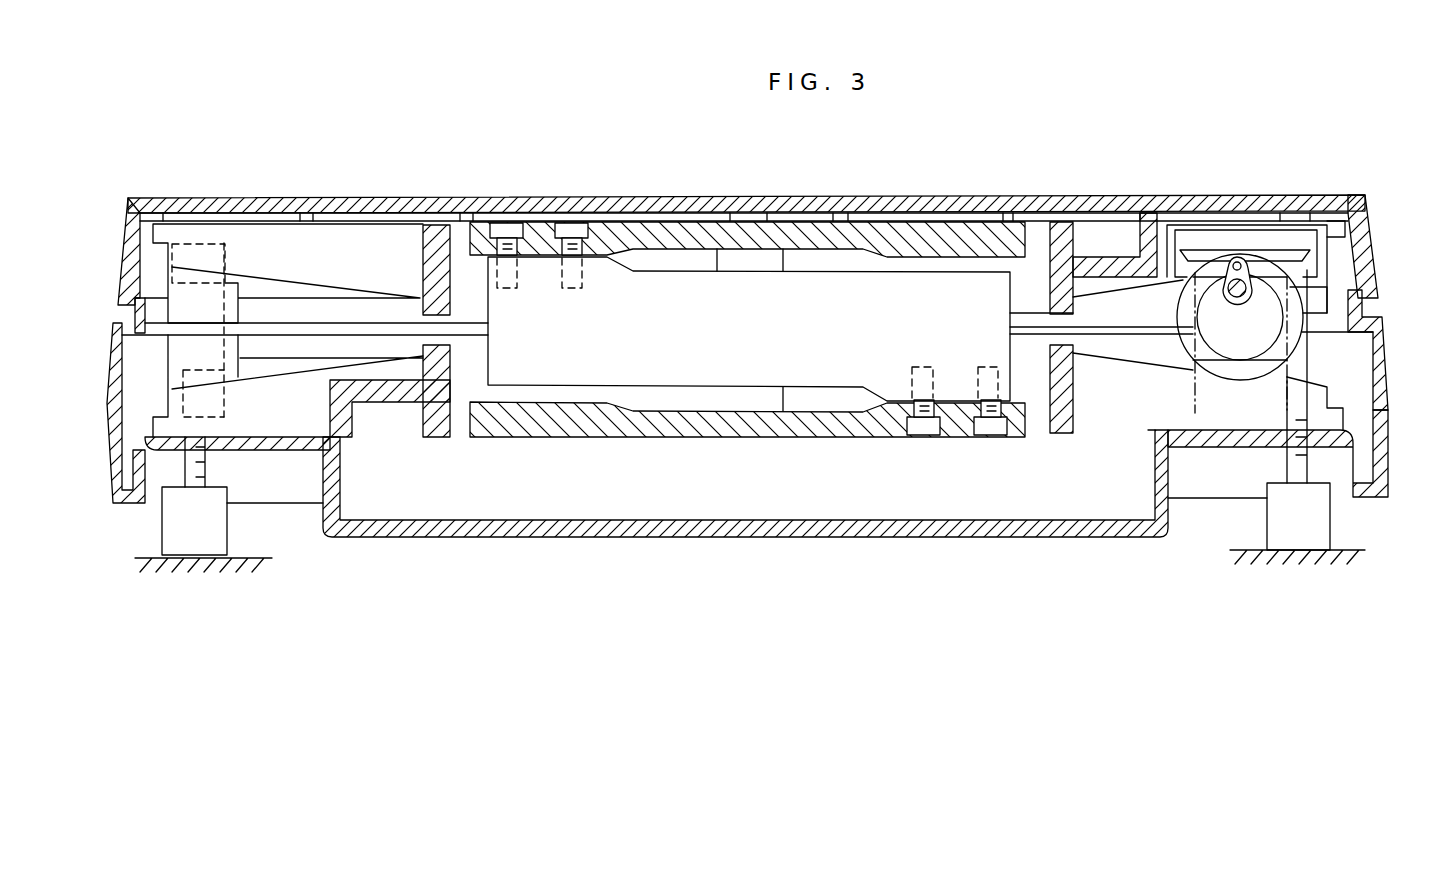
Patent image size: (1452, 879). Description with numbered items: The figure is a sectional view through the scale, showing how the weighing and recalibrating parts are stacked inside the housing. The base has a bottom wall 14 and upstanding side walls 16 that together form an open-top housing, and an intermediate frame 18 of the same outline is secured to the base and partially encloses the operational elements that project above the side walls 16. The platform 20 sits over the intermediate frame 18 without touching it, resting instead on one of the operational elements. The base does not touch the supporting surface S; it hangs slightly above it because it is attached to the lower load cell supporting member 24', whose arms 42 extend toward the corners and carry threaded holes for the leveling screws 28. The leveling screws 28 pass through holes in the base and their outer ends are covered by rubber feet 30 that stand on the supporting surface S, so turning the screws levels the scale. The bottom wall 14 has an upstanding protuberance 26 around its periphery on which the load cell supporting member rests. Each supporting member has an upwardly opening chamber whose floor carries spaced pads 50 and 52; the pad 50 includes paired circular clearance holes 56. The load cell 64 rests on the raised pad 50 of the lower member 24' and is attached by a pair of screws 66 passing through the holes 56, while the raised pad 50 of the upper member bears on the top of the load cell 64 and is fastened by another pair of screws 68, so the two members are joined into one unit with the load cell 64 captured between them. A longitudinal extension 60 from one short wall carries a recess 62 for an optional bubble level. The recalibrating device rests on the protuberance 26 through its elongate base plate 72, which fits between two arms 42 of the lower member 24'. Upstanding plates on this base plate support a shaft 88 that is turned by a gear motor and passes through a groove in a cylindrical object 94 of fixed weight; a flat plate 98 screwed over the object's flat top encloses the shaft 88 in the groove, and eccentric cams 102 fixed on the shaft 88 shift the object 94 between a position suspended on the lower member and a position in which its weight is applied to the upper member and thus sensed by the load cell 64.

The bottom wall 14 is at (667, 517).
The side walls 16 is at (1388, 468).
The intermediate frame 18 is at (1388, 362).
The platform 20 is at (957, 197).
The lower load cell supporting member 24' is at (1121, 462).
The upstanding protuberance 26 is at (287, 503).
The leveling screws 28 is at (207, 464).
The rubber feet 30 is at (170, 528).
The arms 42 is at (327, 240).
The pad 50 is at (545, 258).
The pad 52 is at (555, 400).
The circular clearance holes 56 is at (495, 237).
The longitudinal extension 60 is at (1168, 225).
The recess 62 is at (1075, 237).
The load cell 64 is at (758, 332).
The screws 66 is at (930, 430).
The screws 68 is at (524, 236).
The base plate 72 is at (1328, 282).
The shaft 88 is at (1241, 299).
The cylindrical shaped object 94 is at (1300, 337).
The flat plate 98 is at (1290, 250).
The eccentric cams 102 is at (1226, 287).
The supporting surface S is at (202, 553).